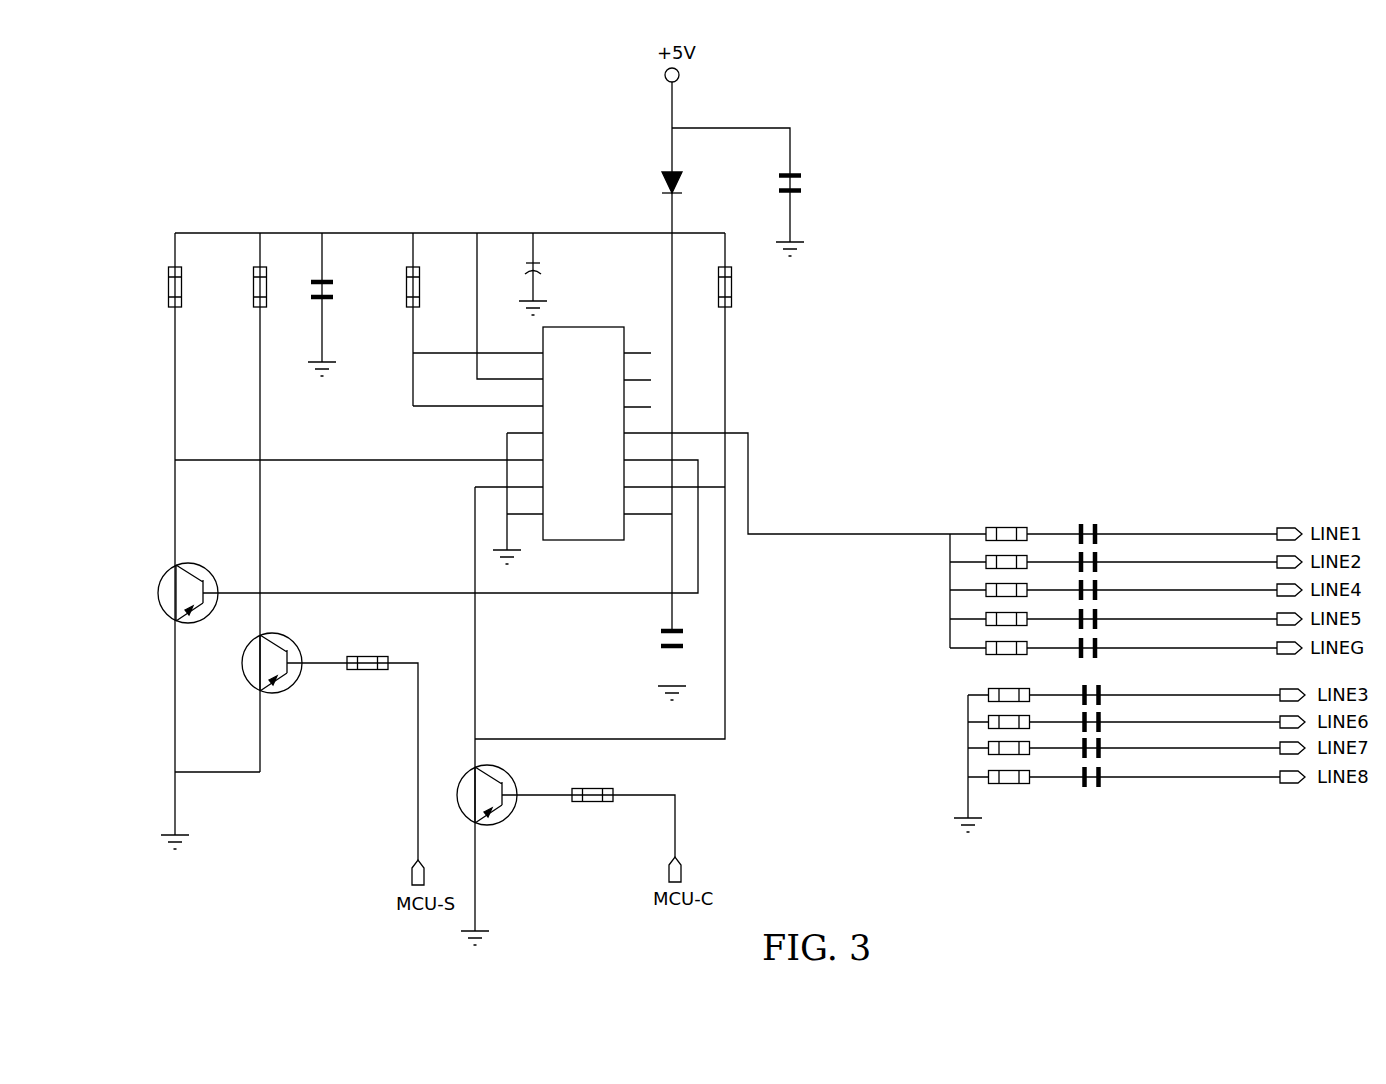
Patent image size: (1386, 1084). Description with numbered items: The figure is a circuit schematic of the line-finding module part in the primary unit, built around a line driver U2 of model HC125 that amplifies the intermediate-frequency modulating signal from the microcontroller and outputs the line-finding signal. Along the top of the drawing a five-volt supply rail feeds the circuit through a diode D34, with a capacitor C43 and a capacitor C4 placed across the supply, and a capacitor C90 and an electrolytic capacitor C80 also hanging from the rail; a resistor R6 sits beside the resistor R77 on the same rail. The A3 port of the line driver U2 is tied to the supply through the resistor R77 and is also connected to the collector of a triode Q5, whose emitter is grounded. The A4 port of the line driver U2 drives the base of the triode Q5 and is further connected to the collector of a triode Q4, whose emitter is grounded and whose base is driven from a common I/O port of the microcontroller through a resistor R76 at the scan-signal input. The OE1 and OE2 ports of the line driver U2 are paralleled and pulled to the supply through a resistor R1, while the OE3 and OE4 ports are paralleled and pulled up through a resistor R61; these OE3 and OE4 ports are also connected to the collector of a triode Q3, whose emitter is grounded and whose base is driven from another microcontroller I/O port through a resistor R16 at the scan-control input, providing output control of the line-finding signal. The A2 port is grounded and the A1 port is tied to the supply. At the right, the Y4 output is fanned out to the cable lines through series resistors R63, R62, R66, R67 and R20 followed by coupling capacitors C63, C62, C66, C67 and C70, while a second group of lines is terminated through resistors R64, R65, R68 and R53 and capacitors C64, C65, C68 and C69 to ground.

The resistor R77 is at (182, 240).
The resistor 6K8 R6 is at (260, 240).
The capacitor 100N C90 is at (334, 235).
The resistor R1 is at (420, 240).
The electrolytic capacitor 47uF C80 is at (534, 223).
The diode 1.3K/1206 D34 is at (629, 168).
The capacitor 10uF C43 is at (829, 190).
The resistor R61 is at (751, 281).
The capacitor 100N C4 is at (646, 649).
The line driver U2 is at (583, 410).
The triode Q5 is at (176, 614).
The triode Q4 is at (291, 689).
The triode Q3 is at (516, 817).
The resistor 100R R76 is at (379, 692).
The resistor 100R R16 is at (618, 820).
The resistor 100R R63 is at (944, 525).
The resistor 100R R62 is at (944, 553).
The resistor 100R R66 is at (944, 581).
The resistor 100R R67 is at (944, 610).
The resistor 100R R20 is at (944, 639).
The capacitor 100N C63 is at (1165, 526).
The capacitor 100N C62 is at (1165, 554).
The capacitor 100N C66 is at (1165, 582).
The capacitor 100N C67 is at (1165, 611).
The capacitor 100N C70 is at (1165, 640).
The resistor 100R R64 is at (940, 694).
The resistor 100R R65 is at (940, 721).
The resistor 100R R68 is at (940, 747).
The resistor 100R R53 is at (940, 776).
The capacitor 100N C64 is at (1158, 687).
The capacitor 100N C65 is at (1158, 714).
The capacitor 100N C68 is at (1158, 740).
The capacitor 100N C69 is at (1158, 769).